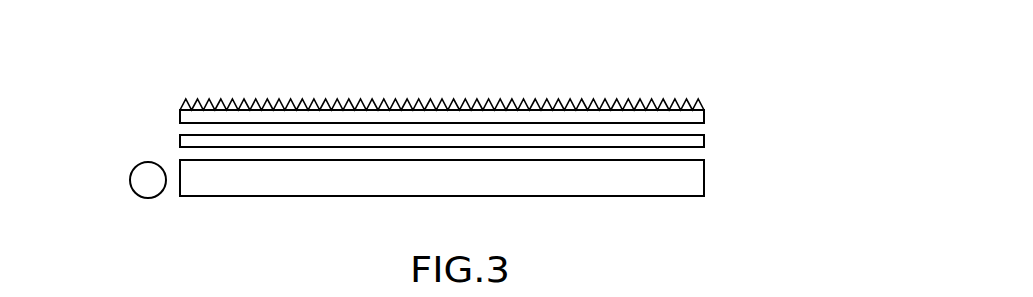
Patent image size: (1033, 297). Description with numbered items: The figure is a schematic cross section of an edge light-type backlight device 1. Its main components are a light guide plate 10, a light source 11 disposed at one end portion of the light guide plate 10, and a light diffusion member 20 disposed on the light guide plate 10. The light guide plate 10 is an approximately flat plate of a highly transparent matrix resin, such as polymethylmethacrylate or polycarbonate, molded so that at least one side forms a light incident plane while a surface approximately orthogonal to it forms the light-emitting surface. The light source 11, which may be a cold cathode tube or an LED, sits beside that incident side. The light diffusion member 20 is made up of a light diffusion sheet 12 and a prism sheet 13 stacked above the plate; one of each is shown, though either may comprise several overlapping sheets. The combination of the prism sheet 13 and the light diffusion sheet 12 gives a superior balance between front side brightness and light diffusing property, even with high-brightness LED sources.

The backlight unit 1 is at (529, 73).
The light guide plate 10 is at (704, 187).
The light source 11 is at (130, 178).
The light diffusion sheet 12 is at (704, 135).
The prism sheet 13 is at (704, 110).
The light diffusion member 20 is at (803, 50).